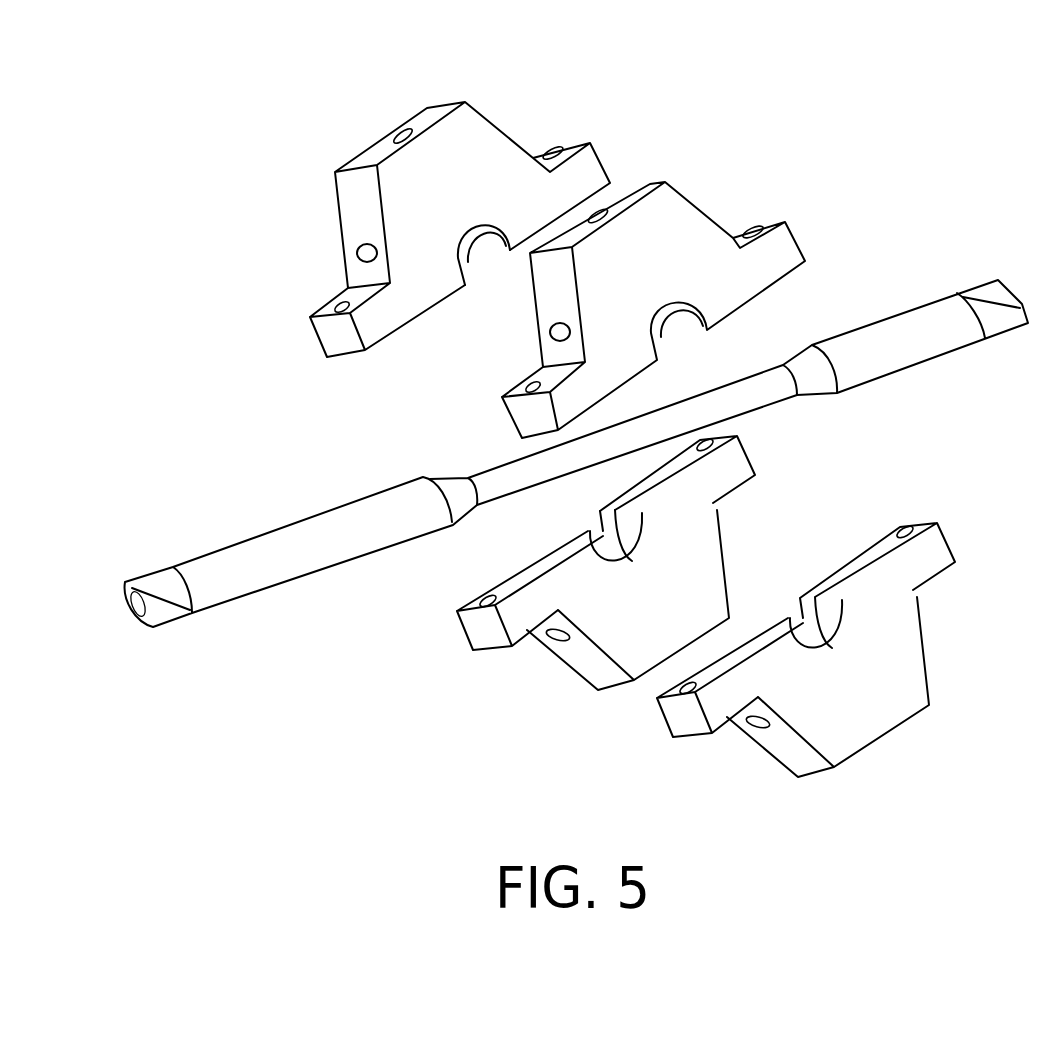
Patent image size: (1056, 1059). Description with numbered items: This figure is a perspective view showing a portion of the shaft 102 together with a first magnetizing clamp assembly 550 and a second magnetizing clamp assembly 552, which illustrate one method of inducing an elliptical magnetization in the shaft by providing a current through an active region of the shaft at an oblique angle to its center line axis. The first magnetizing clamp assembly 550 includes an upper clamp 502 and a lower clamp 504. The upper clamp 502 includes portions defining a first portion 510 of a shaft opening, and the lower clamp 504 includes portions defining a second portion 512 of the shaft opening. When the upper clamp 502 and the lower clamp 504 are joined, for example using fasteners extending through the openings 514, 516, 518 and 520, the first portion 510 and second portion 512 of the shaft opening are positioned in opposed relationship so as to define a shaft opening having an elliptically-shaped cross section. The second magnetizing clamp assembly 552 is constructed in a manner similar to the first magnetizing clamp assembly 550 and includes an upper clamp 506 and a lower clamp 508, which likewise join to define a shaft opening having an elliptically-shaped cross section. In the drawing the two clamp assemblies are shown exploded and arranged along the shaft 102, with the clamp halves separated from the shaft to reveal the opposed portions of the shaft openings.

The shaft 102 is at (217, 515).
The upper clamp 502 is at (457, 198).
The lower clamp 504 is at (614, 556).
The upper clamp 506 is at (688, 192).
The lower clamp 508 is at (925, 649).
The first portion of shaft opening 510 is at (488, 280).
The second portion of shaft opening 512 is at (583, 513).
The opening 514 is at (340, 307).
The opening 516 is at (483, 600).
The opening 518 is at (558, 152).
The opening 520 is at (708, 446).
The first magnetizing clamp assembly 550 is at (493, 365).
The second magnetizing clamp assembly 552 is at (763, 457).